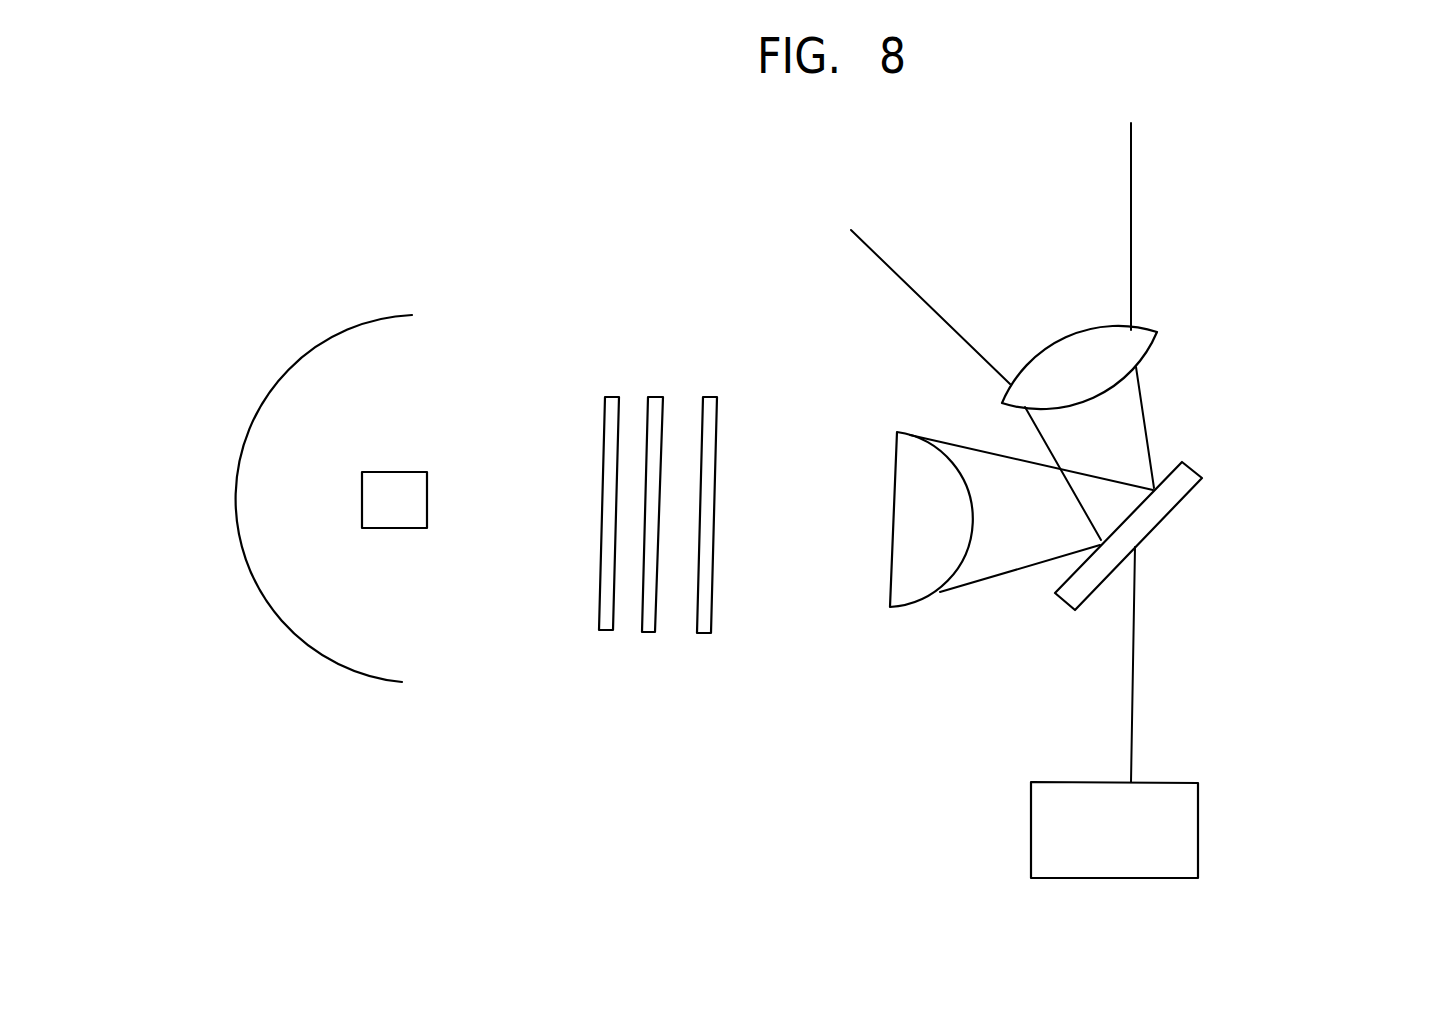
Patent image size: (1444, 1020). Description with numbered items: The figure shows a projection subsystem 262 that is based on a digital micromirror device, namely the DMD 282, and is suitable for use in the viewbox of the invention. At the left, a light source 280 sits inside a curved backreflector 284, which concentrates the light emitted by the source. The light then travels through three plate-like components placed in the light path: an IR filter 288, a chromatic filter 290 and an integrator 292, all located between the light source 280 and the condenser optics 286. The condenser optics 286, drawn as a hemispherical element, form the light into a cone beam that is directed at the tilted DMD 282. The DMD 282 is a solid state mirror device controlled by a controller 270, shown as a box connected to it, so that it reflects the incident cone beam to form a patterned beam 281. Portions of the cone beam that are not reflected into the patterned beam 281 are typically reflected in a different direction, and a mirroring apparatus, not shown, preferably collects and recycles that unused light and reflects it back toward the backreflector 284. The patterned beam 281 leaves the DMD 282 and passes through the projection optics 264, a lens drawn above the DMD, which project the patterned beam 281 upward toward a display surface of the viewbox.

The projection subsystem 262 is at (1305, 188).
The projection optics 264 is at (1135, 338).
The controller 270 is at (1200, 845).
The light source 280 is at (388, 472).
The patterned beam 281 is at (1131, 182).
The DMD (digital micromirror device) 282 is at (1183, 475).
The backreflector 284 is at (238, 427).
The condenser optics 286 is at (905, 432).
The IR filter 288 is at (603, 633).
The chromatic filter 290 is at (658, 397).
The integrator 292 is at (703, 633).